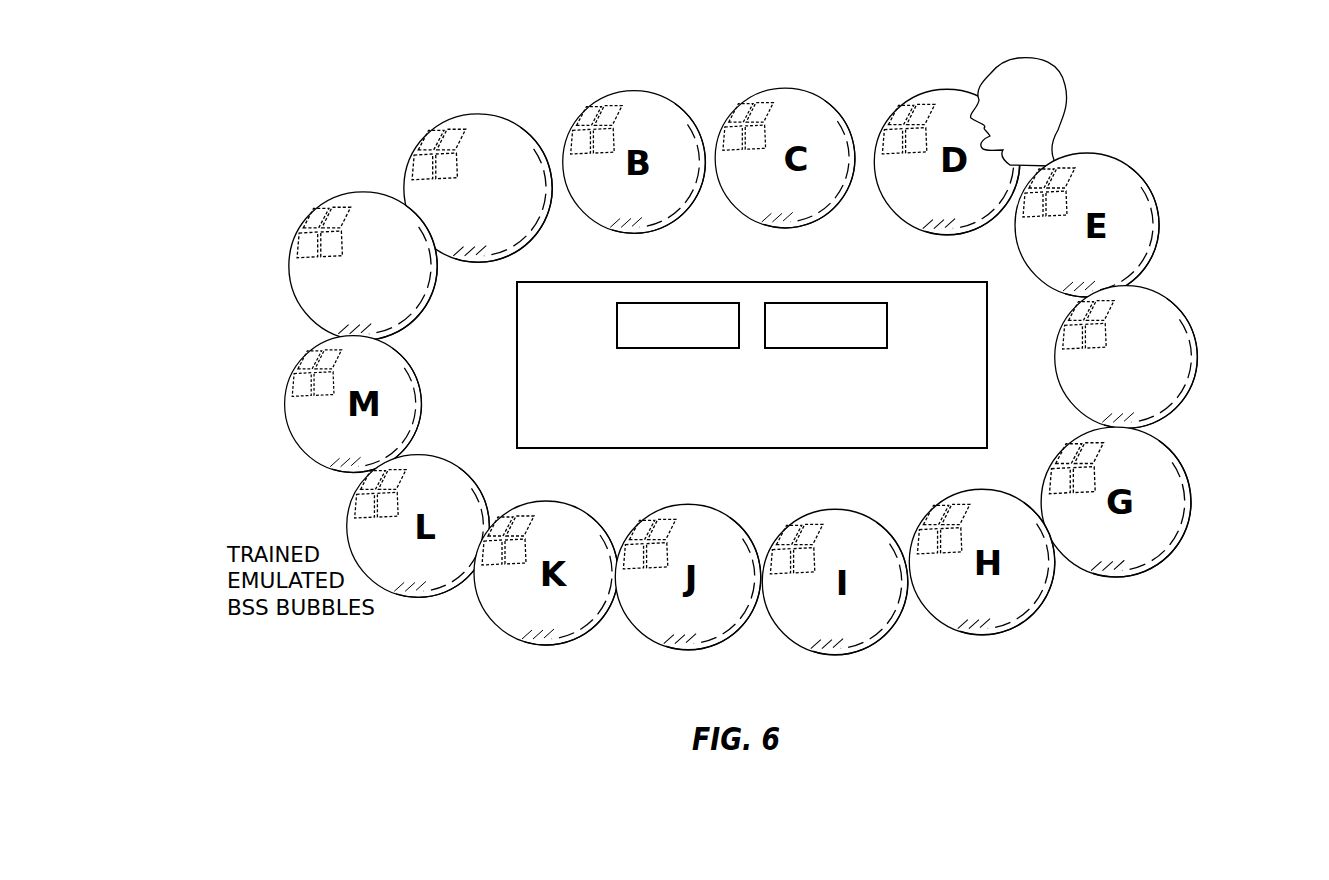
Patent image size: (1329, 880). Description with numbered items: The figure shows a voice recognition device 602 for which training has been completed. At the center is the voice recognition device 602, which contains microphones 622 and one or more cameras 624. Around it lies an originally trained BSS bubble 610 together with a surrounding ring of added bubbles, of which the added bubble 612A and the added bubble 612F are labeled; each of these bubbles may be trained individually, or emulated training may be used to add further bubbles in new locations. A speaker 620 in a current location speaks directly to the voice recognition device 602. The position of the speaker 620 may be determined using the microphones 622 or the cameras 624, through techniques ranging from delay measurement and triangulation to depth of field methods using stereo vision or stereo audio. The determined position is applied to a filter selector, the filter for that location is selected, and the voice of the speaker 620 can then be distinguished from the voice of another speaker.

The originally trained BSS bubble 610 is at (334, 197).
The added bubble 612A is at (505, 116).
The added bubble 612F is at (1205, 320).
The speaker 620 is at (1018, 57).
The microphones 622 is at (707, 303).
The cameras 624 is at (841, 303).
The voice recognition device 602 is at (768, 436).